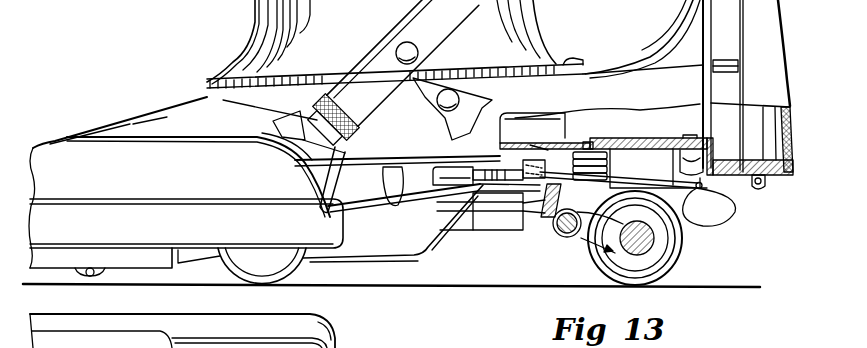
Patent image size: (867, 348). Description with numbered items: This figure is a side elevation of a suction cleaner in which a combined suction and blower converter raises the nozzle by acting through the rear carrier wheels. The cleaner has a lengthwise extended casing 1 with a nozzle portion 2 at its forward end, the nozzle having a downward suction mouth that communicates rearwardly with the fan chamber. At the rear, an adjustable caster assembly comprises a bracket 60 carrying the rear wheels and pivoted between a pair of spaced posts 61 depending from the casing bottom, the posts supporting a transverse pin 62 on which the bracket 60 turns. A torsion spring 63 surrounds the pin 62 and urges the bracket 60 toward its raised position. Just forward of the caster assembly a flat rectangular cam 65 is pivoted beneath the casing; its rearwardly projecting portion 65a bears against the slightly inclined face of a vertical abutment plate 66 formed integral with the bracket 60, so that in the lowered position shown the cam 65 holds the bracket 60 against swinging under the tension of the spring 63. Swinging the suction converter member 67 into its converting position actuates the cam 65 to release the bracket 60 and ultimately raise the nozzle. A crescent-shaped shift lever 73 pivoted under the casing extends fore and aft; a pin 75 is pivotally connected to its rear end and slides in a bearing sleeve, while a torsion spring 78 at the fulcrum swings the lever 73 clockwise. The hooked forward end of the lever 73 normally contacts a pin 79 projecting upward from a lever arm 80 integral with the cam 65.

The casing 1 is at (386, 134).
The nozzle portion 2 is at (128, 118).
The bracket 60 is at (660, 270).
The posts 61 is at (546, 218).
The transverse pin 62 is at (557, 239).
The torsion spring 63 is at (607, 185).
The cam 65 is at (448, 210).
The portion 65a is at (479, 196).
The abutment plate 66 is at (527, 180).
The suction converter member 67 is at (650, 158).
The shift lever 73 is at (628, 172).
The pin 75 is at (700, 225).
The torsion spring 78 is at (583, 144).
The pin 79 is at (548, 205).
The lever arm 80 is at (496, 165).